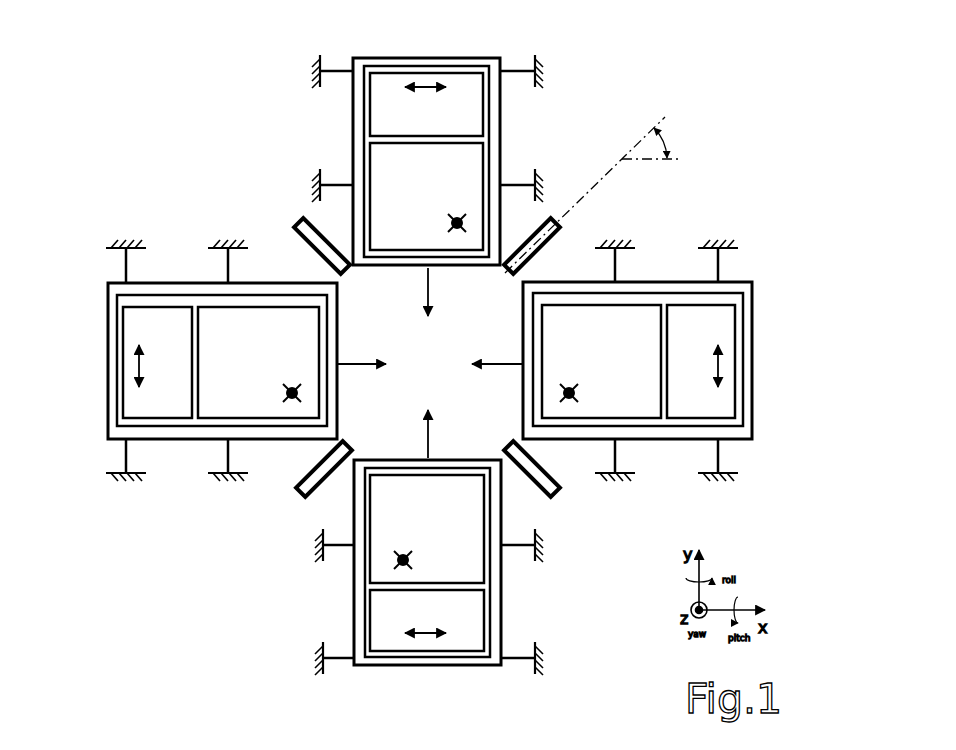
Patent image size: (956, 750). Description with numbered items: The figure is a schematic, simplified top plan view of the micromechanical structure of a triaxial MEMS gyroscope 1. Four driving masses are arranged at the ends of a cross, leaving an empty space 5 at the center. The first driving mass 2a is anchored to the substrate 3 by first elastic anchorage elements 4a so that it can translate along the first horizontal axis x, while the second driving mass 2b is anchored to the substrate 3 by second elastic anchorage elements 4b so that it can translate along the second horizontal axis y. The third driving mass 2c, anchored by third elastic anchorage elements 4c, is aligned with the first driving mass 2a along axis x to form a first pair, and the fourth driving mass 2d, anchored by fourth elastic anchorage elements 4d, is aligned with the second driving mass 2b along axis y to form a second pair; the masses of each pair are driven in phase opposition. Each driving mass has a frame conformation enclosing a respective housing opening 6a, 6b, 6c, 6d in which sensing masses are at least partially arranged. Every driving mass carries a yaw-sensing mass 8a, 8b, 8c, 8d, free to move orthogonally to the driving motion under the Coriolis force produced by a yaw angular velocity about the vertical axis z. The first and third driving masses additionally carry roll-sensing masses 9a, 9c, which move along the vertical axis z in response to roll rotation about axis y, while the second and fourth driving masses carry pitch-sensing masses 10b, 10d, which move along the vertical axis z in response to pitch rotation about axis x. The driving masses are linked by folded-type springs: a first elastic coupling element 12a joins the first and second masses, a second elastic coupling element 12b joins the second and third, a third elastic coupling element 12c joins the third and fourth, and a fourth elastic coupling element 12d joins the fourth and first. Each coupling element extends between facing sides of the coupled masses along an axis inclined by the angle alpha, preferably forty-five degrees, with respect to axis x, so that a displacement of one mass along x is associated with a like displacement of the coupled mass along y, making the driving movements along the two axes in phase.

The micromechanical structure of a triaxial MEMS gyroscope 1 is at (744, 124).
The first driving mass 2a is at (752, 340).
The second driving mass 2b is at (493, 120).
The third driving mass 2c is at (110, 348).
The fourth driving mass 2d is at (495, 625).
The substrate 3 is at (317, 74).
The first elastic anchorage elements 4a is at (722, 258).
The second elastic anchorage elements 4b is at (340, 60).
The third elastic anchorage elements 4c is at (124, 265).
The fourth elastic anchorage elements 4d is at (331, 661).
The empty space 5 is at (469, 340).
The housing opening 6a is at (672, 296).
The housing opening 6b is at (375, 170).
The housing opening 6c is at (183, 418).
The housing opening 6d is at (418, 652).
The yaw-sensing mass 8a is at (676, 415).
The yaw-sensing mass 8b is at (405, 75).
The yaw-sensing mass 8c is at (157, 315).
The yaw-sensing mass 8d is at (382, 628).
The roll-sensing mass 9a is at (600, 405).
The roll-sensing mass 9c is at (258, 408).
The pitch-sensing mass 10b is at (448, 175).
The pitch-sensing mass 10d is at (458, 565).
The first elastic coupling element 12a is at (540, 254).
The second elastic coupling element 12b is at (300, 236).
The third elastic coupling element 12c is at (320, 490).
The fourth elastic coupling element 12d is at (540, 496).